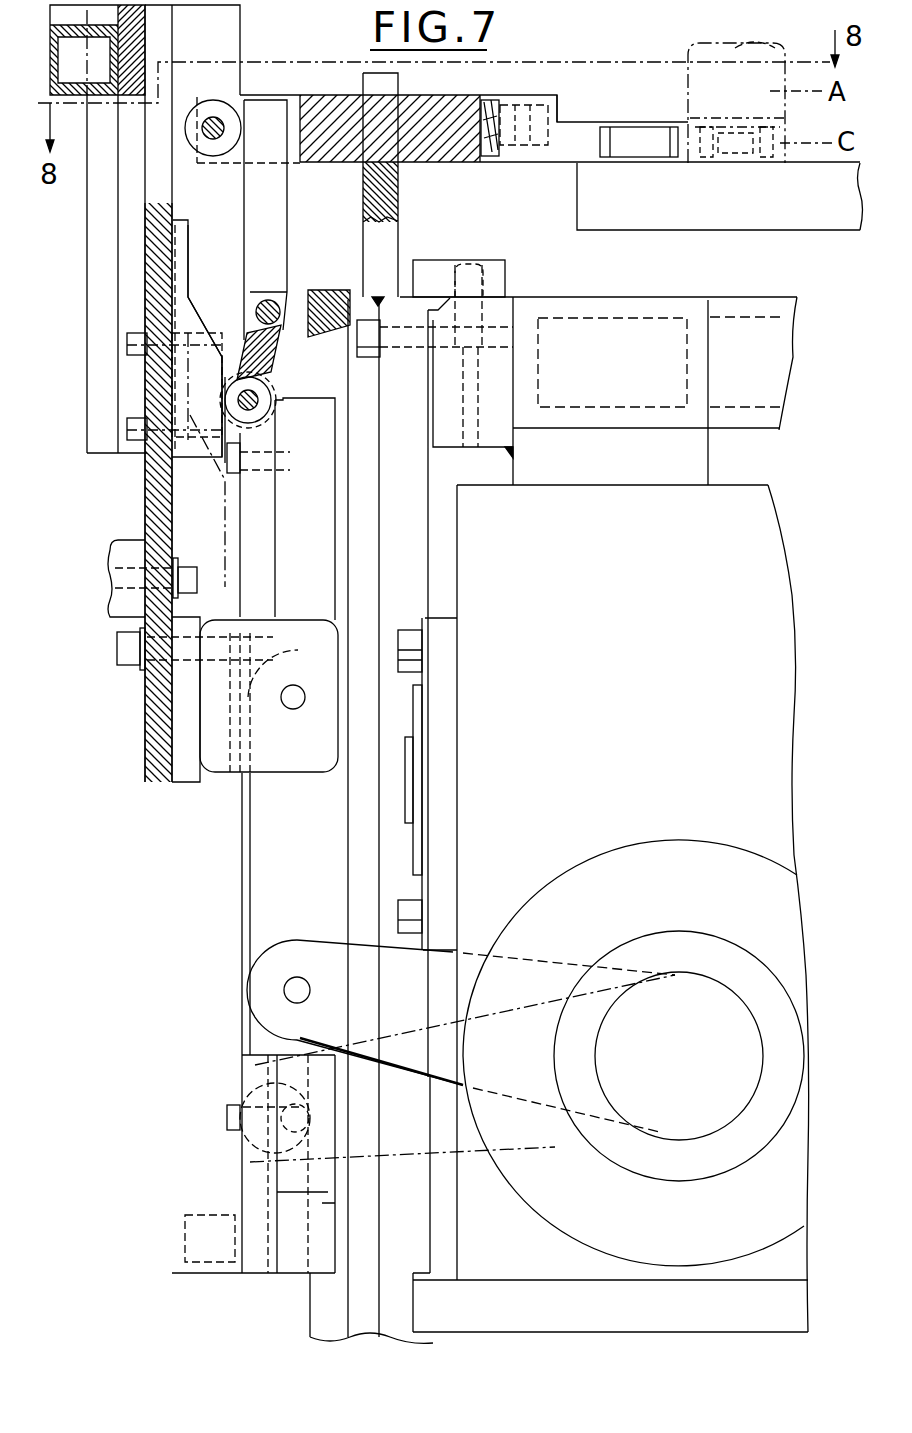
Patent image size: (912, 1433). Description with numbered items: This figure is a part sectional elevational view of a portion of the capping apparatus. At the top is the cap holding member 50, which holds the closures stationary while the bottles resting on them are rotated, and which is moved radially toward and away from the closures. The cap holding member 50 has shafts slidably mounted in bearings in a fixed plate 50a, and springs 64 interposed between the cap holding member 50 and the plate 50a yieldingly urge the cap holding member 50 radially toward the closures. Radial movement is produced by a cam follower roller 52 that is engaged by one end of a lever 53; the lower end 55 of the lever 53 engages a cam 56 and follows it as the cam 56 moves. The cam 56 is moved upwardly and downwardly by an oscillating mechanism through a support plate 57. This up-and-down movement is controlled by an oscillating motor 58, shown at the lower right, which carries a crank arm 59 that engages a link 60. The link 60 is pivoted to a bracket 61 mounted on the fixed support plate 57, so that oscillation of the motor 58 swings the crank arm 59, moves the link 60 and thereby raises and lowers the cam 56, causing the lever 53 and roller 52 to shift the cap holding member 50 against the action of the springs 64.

The cap holding member 50 is at (577, 121).
The fixed plate 50a is at (392, 211).
The cam follower roller 52 is at (225, 148).
The lever 53 is at (277, 250).
The lower end of lever 55 is at (265, 410).
The cam 56 is at (202, 308).
The support plate 57 is at (155, 717).
The oscillating motor 58 is at (683, 840).
The crank arm 59 is at (443, 963).
The link 60 is at (296, 898).
The bracket 61 is at (220, 762).
The springs 64 is at (492, 157).